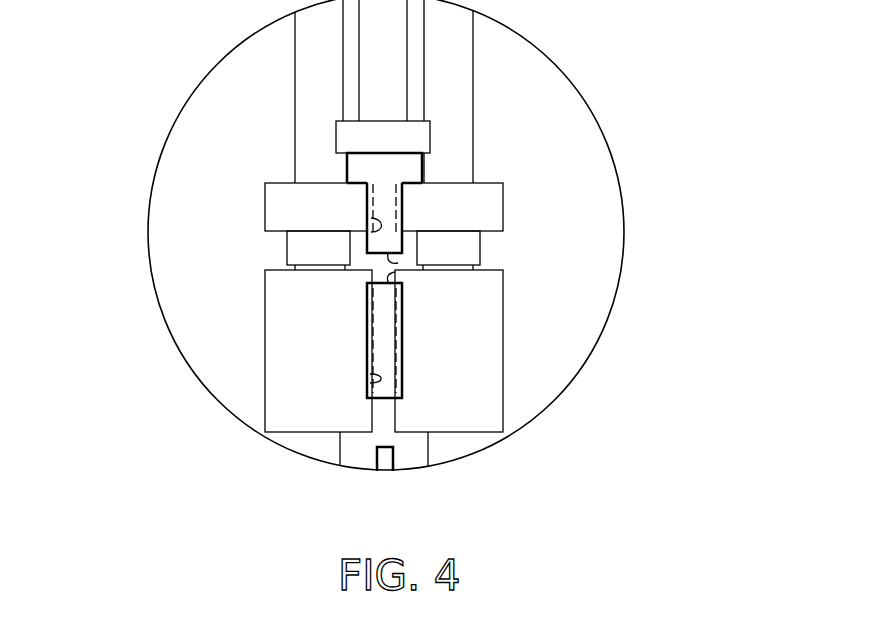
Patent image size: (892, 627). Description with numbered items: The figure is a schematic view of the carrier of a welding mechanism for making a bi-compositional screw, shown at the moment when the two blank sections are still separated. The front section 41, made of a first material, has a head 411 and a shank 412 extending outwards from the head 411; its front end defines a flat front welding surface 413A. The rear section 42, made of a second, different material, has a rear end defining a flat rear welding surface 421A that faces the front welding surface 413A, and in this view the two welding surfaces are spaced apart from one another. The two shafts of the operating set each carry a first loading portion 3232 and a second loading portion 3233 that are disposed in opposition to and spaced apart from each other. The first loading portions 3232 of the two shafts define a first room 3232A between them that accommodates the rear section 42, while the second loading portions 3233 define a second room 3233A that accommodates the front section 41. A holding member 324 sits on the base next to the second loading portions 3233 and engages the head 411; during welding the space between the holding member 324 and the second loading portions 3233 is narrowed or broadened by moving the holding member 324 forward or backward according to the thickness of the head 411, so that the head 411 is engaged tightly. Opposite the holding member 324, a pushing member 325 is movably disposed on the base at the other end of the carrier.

The holding member 324 is at (343, 135).
The front section 41 is at (373, 154).
The head 411 is at (410, 168).
The shank 412 is at (378, 211).
The front welding surface 413A is at (398, 263).
The rear welding surface 421A is at (395, 272).
The rear section 42 is at (385, 355).
The second loading portion 3233 is at (277, 208).
The second room 3233A is at (371, 232).
The first loading portion 3232 is at (285, 343).
The first room 3232A is at (370, 383).
The pushing member 325 is at (388, 458).